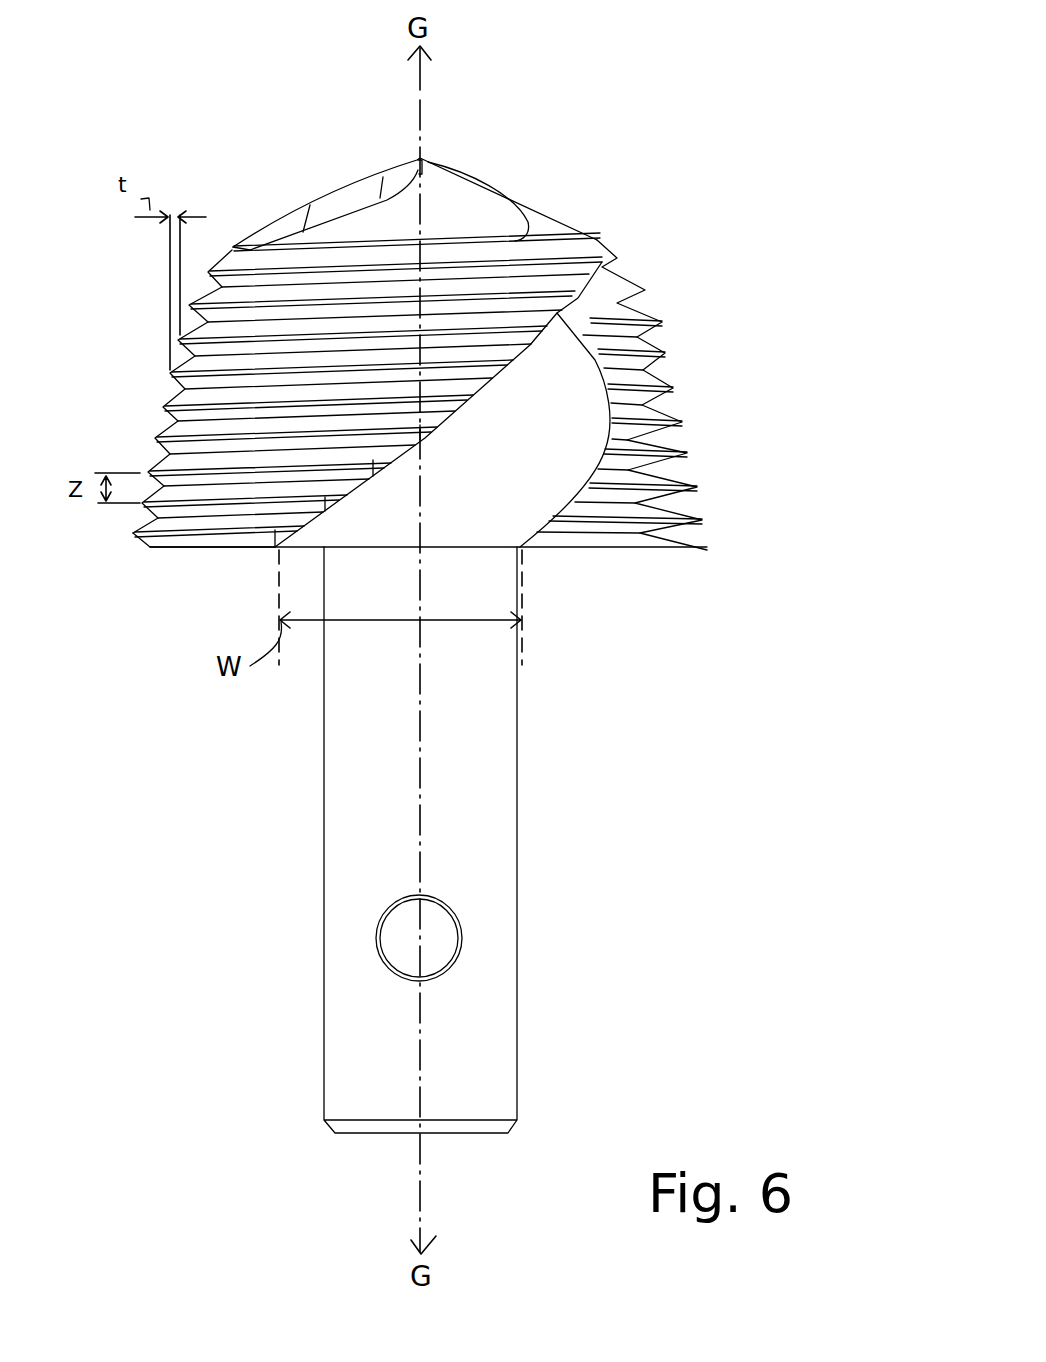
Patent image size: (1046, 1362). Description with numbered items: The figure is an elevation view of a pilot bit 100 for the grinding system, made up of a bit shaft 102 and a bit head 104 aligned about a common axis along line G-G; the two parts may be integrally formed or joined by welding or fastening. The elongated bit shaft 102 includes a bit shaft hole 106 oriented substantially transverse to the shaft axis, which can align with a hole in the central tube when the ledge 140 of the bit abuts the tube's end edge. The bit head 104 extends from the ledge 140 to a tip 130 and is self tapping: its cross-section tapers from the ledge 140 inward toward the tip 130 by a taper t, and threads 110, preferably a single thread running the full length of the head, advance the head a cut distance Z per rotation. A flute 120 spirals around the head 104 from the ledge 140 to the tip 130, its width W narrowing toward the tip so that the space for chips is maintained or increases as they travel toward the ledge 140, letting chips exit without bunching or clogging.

The bit 100 is at (755, 194).
The bit shaft 102 is at (532, 1046).
The bit head 104 is at (753, 470).
The bit shaft hole 106 is at (462, 930).
The threads 110 is at (158, 397).
The flute 120 is at (560, 482).
The tip 130 is at (427, 158).
The ledge 140 is at (177, 550).